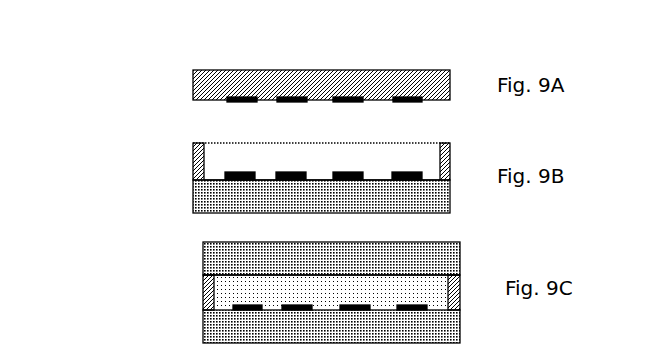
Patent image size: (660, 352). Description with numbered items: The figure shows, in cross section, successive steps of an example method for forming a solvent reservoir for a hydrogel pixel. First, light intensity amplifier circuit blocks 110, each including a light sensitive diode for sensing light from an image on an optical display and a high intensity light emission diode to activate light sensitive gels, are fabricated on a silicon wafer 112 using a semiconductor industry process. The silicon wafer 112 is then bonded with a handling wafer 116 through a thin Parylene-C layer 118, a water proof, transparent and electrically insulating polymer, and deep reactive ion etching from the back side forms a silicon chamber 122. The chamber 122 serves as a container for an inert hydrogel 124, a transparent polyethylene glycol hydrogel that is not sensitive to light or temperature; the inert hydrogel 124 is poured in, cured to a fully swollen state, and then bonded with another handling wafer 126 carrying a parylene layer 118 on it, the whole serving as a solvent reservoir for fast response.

In FIG. 9A, the light intensity amplifier circuit blocks 110 is at (243, 102).
In FIG. 9B, the light intensity amplifier circuit blocks 110 is at (400, 175).
In FIG. 9C, the light intensity amplifier circuit blocks 110 is at (420, 307).
In FIG. 9A, the silicon wafer 112 is at (428, 70).
In FIG. 9B, the handling wafer 116 is at (203, 205).
In FIG. 9C, the handling wafer 116 is at (230, 330).
In FIG. 9B, the Parylene-C layer 118 is at (407, 144).
In FIG. 9C, the Parylene-C layer 118 is at (430, 273).
In FIG. 9B, the silicon chamber 122 is at (200, 155).
In FIG. 9C, the inert hydrogel 124 is at (227, 285).
In FIG. 9C, the handling wafer 126 is at (213, 257).